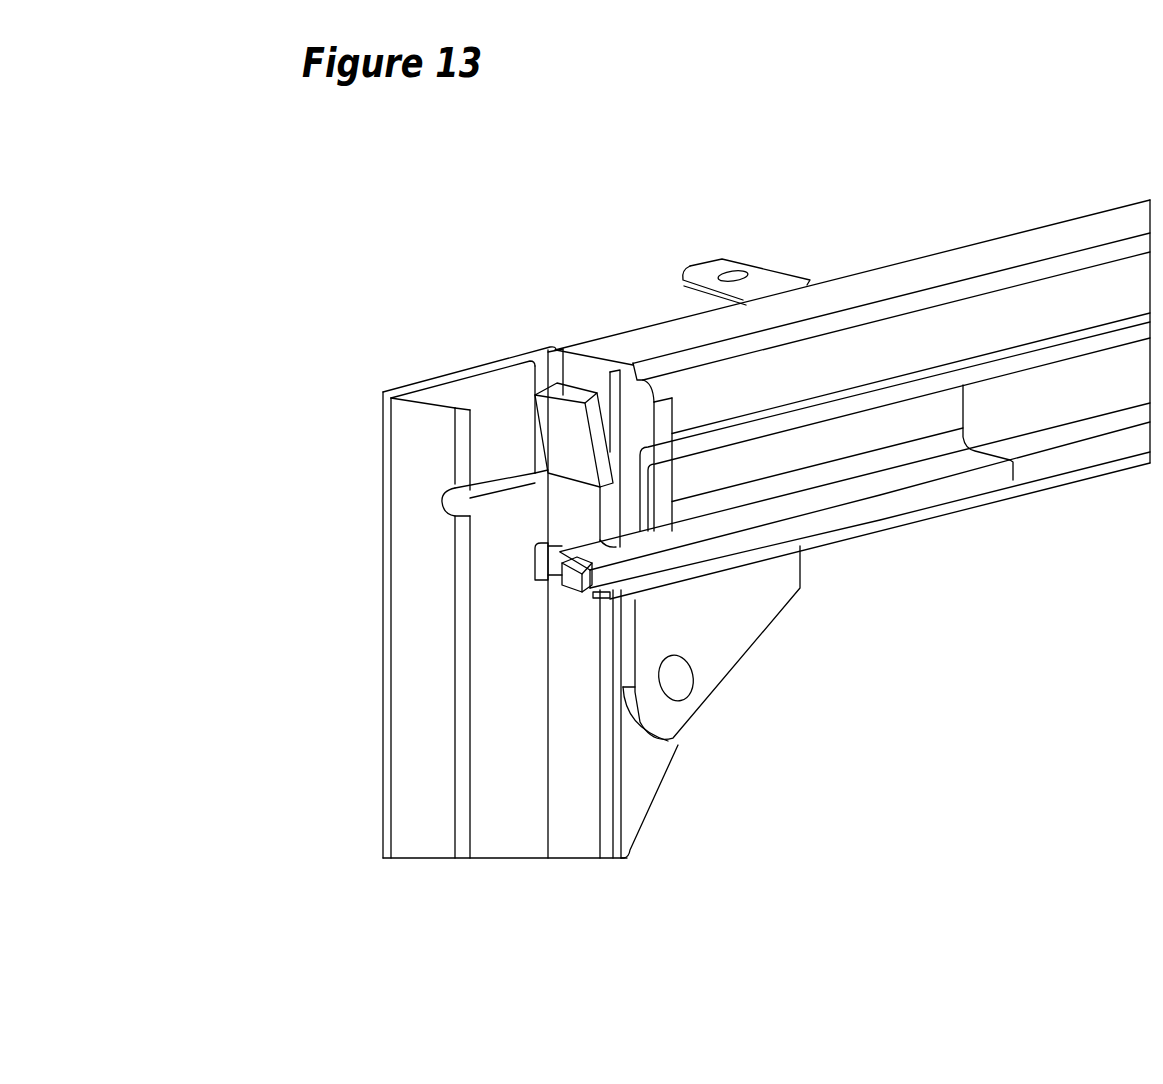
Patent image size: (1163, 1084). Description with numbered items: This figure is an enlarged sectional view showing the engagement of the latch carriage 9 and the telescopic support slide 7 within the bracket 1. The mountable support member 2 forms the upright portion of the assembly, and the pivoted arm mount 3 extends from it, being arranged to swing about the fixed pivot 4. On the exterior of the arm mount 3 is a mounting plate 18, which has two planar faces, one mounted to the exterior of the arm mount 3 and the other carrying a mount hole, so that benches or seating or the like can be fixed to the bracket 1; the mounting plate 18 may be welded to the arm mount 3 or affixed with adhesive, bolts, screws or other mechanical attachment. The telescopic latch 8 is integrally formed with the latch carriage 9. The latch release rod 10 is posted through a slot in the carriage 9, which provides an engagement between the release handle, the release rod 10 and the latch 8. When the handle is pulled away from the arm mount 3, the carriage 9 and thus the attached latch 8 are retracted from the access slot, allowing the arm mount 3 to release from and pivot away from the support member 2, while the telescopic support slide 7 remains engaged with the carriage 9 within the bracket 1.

The bracket 1 is at (314, 313).
The mountable support member 2 is at (400, 633).
The pivoted arm mount 3 is at (616, 339).
The fixed pivot 4 is at (776, 693).
The telescopic support slide 7 is at (594, 829).
The telescopic latch 8 is at (597, 580).
The latch carriage 9 is at (913, 504).
The latch release rod 10 is at (1015, 334).
The mounting plate 18 is at (763, 252).